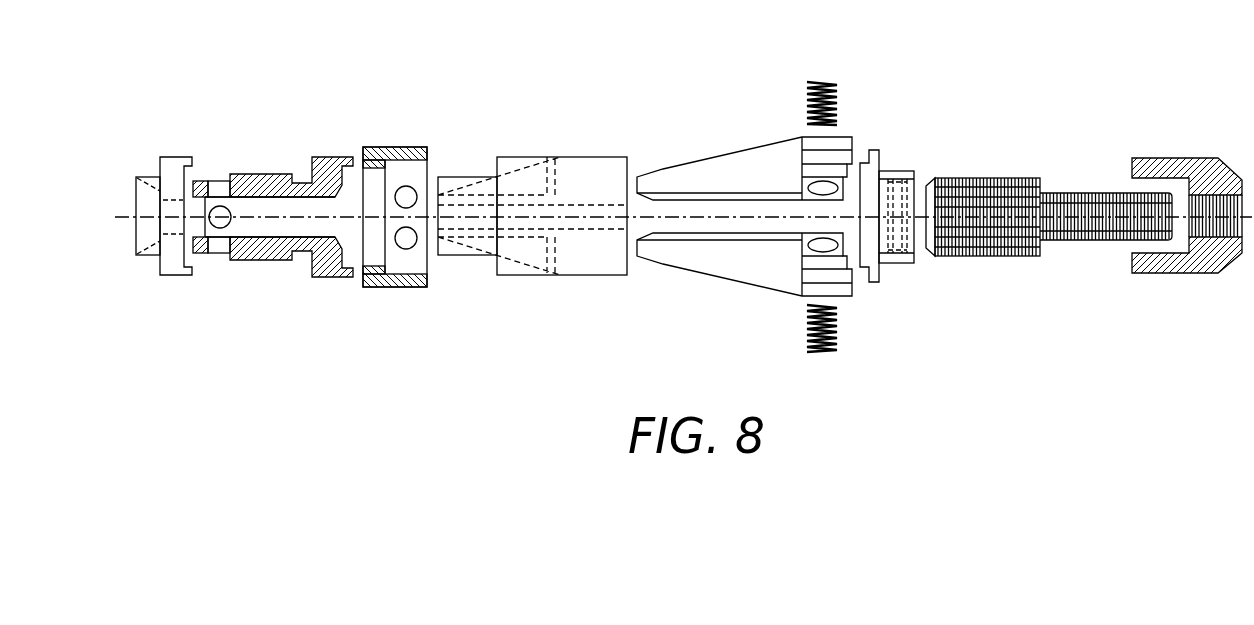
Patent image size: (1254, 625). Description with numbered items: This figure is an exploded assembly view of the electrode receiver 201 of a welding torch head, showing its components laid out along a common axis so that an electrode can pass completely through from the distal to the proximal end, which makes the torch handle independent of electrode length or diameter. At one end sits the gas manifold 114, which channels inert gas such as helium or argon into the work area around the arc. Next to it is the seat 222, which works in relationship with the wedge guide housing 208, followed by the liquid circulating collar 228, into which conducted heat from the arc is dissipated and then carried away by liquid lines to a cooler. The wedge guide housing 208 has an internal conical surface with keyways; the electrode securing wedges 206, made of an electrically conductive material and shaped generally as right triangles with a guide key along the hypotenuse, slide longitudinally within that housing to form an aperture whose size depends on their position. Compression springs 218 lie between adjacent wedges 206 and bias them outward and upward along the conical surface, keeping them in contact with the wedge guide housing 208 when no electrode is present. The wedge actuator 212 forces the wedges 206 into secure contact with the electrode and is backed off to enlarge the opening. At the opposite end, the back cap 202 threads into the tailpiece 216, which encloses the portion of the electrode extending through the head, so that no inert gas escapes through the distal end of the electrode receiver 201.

The electrode receiver 201 is at (610, 80).
The gas manifold 114 is at (150, 177).
The seat 222 is at (262, 260).
The liquid circulating collar 228 is at (393, 147).
The wedge guide housing 208 is at (527, 157).
The electrode securing wedge 206 is at (735, 152).
The compression spring 218 is at (837, 100).
The back cap 202 is at (897, 171).
The wedge actuator 212 is at (984, 256).
The tailpiece 216 is at (1178, 158).